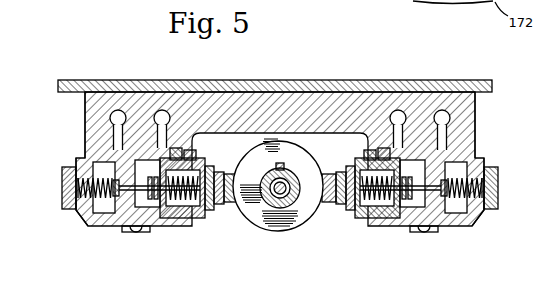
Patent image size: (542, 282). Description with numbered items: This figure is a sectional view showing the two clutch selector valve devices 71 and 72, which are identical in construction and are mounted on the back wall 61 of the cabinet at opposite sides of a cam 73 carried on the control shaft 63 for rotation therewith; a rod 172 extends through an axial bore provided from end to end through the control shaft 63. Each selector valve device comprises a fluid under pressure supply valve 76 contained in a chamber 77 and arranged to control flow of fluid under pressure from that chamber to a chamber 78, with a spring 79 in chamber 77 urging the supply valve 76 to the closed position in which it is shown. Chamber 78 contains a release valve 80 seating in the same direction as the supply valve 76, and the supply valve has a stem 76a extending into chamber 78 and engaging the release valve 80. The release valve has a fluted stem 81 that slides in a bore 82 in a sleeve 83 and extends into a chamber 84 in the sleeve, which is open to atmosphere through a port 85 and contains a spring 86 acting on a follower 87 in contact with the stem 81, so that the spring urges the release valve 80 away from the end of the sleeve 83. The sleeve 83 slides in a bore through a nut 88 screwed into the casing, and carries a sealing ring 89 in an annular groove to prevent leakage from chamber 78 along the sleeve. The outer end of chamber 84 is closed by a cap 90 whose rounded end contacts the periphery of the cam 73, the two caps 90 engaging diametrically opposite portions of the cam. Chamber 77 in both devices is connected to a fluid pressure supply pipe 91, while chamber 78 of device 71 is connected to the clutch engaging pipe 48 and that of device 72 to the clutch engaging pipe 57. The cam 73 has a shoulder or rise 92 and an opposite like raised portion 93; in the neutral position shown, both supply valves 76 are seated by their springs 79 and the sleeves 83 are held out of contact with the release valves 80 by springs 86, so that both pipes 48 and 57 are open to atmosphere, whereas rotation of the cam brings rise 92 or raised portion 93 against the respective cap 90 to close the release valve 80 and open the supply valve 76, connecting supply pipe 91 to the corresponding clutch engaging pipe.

The clutch engaging pipe 48 is at (165, 110).
The clutch engaging pipe 57 is at (397, 110).
The back wall 61 is at (331, 78).
The control shaft 63 is at (271, 210).
The clutch selector valve device 71 is at (85, 227).
The clutch selector valve device 72 is at (475, 227).
The cam 73 is at (275, 232).
The fluid under pressure supply valve 76 is at (92, 150).
The stem 76a is at (100, 140).
The chamber 77 is at (100, 170).
The chamber 78 is at (128, 224).
The spring 79 is at (62, 185).
The release valve 80 is at (140, 218).
The fluted stem 81 is at (153, 220).
The bore 82 is at (172, 212).
The sleeve 83 is at (186, 214).
The chamber 84 is at (210, 214).
The port 85 is at (218, 212).
The spring 86 is at (214, 206).
The follower 87 is at (212, 160).
The nut 88 is at (186, 156).
The sealing ring 89 is at (166, 210).
The cap 90 is at (247, 222).
The fluid pressure supply pipe 91 is at (120, 110).
The shoulder or rise 92 is at (275, 177).
The shoulder or raised portion 93 is at (285, 178).
The rod 172 is at (283, 210).